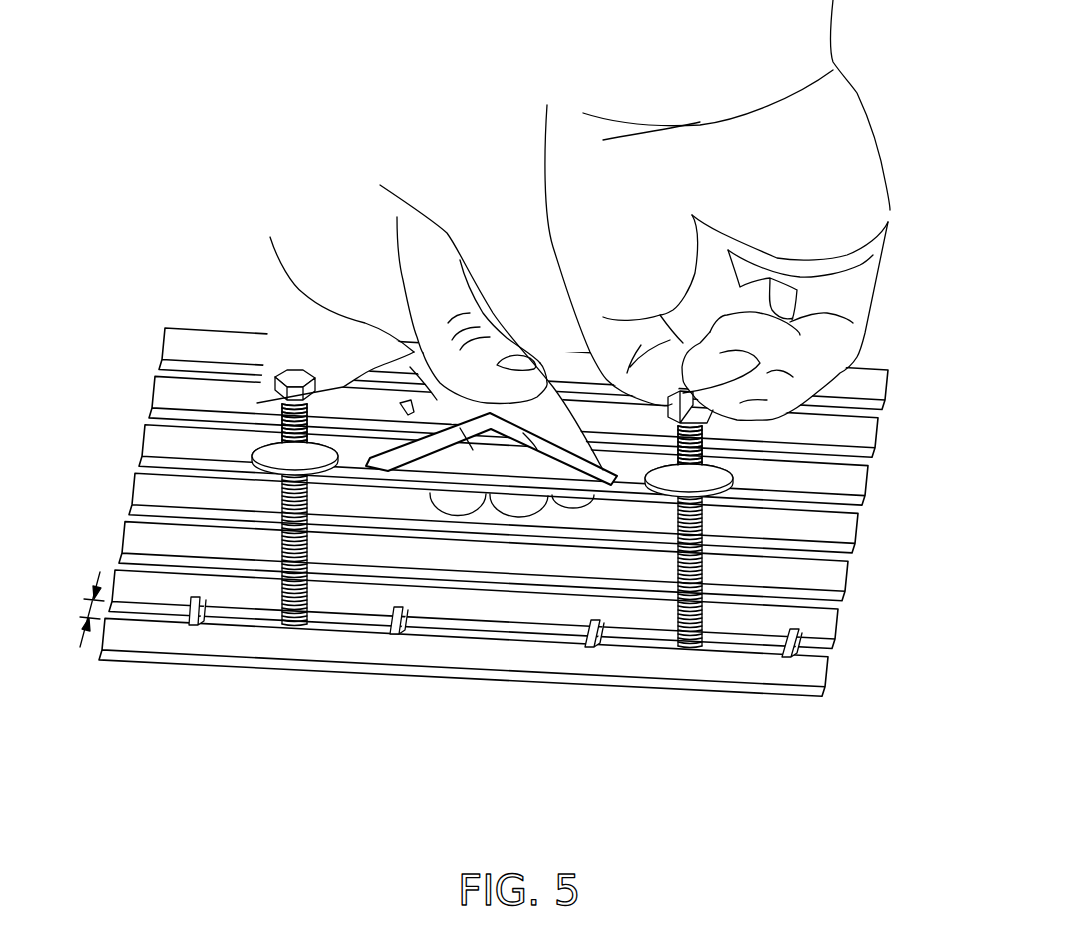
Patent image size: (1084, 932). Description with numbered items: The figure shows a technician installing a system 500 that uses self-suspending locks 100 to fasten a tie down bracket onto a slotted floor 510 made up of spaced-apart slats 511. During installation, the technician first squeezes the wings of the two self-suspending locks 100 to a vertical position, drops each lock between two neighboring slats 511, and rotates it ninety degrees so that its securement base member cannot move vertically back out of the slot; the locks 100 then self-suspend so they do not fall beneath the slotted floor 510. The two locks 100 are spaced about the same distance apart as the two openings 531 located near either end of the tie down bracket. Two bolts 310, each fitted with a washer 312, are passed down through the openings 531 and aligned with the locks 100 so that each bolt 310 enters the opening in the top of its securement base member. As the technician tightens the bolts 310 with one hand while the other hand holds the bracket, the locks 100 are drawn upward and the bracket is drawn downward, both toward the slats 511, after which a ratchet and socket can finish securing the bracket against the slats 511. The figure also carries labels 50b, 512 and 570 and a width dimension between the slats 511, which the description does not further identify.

The system 500 is at (505, 371).
The cable 50b is at (250, 243).
The slotted floor 510 is at (505, 532).
The slats 511 is at (860, 527).
The gap between slats 512 is at (118, 562).
The bolt 310 is at (307, 596).
The washers 312 is at (248, 453).
The openings 531 is at (345, 474).
The marking tool 570 is at (585, 476).
The self-suspending lock 100 is at (392, 633).